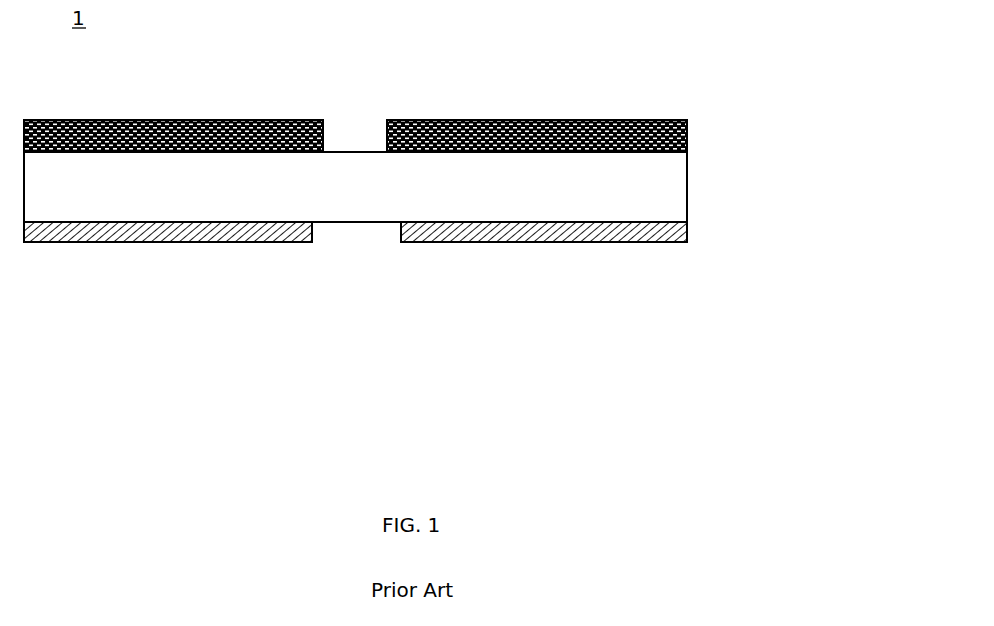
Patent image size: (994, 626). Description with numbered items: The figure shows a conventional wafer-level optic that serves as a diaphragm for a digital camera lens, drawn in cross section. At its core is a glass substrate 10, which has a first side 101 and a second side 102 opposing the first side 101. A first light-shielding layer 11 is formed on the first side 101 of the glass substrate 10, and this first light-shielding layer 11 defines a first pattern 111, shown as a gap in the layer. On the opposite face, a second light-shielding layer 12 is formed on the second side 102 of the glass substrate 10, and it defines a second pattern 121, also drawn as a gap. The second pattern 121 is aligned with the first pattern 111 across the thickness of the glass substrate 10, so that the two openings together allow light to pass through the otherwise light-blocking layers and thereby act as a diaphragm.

The glass substrate 10 is at (667, 168).
The first side 101 is at (682, 229).
The second side 102 is at (687, 136).
The first light-shielding layer 11 is at (605, 227).
The first pattern 111 is at (345, 232).
The second light-shielding layer 12 is at (600, 121).
The second pattern 121 is at (358, 128).